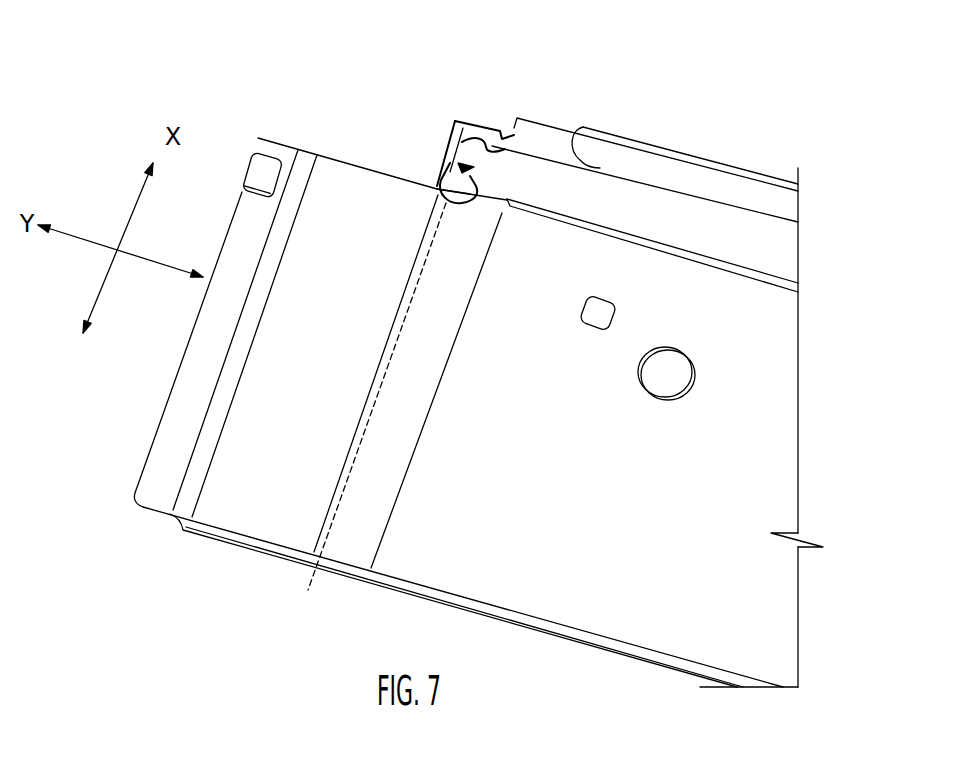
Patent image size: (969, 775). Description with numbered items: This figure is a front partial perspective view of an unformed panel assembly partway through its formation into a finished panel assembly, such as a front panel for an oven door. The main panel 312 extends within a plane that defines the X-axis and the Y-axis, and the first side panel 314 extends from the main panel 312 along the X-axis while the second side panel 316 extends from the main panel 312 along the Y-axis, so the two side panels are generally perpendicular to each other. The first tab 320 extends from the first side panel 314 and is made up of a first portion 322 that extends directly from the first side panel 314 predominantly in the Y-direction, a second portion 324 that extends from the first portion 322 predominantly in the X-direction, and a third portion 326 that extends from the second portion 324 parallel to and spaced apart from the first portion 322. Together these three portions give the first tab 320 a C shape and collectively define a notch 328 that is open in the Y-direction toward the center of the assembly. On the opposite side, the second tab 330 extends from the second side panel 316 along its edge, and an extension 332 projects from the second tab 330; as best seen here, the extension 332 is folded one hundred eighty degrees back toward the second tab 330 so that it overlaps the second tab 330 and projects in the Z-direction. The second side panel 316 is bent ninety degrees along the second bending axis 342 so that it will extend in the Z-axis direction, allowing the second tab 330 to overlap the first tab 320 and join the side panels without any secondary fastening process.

The main panel 312 is at (688, 462).
The first side panel 314 is at (698, 218).
The second side panel 316 is at (263, 470).
The first tab 320 is at (812, 75).
The first portion 322 is at (478, 120).
The second portion 324 is at (467, 168).
The third portion 326 is at (478, 200).
The notch 328 is at (442, 189).
The second tab 330 is at (187, 393).
The extension 332 is at (263, 152).
The second bending axis 342 is at (393, 410).